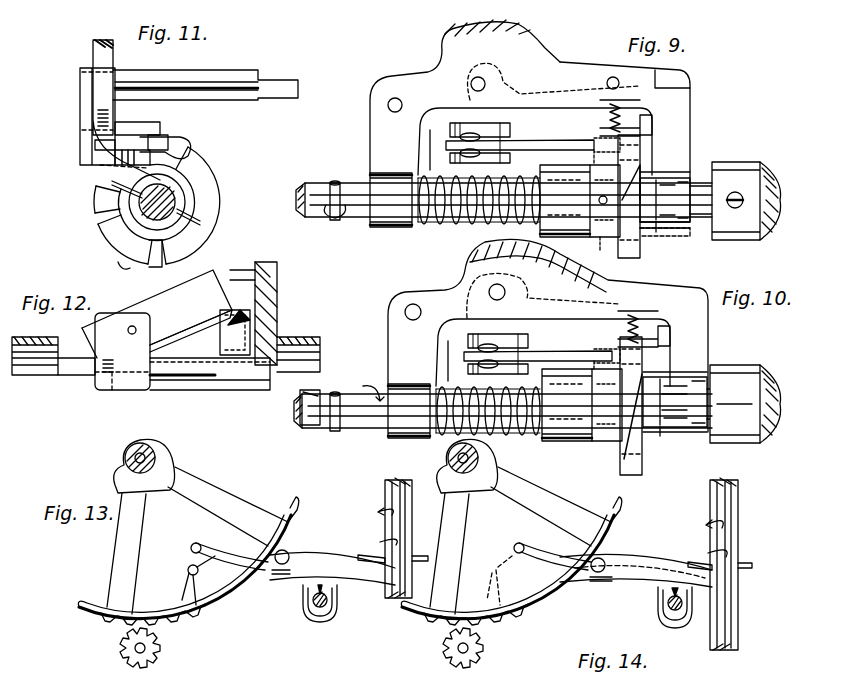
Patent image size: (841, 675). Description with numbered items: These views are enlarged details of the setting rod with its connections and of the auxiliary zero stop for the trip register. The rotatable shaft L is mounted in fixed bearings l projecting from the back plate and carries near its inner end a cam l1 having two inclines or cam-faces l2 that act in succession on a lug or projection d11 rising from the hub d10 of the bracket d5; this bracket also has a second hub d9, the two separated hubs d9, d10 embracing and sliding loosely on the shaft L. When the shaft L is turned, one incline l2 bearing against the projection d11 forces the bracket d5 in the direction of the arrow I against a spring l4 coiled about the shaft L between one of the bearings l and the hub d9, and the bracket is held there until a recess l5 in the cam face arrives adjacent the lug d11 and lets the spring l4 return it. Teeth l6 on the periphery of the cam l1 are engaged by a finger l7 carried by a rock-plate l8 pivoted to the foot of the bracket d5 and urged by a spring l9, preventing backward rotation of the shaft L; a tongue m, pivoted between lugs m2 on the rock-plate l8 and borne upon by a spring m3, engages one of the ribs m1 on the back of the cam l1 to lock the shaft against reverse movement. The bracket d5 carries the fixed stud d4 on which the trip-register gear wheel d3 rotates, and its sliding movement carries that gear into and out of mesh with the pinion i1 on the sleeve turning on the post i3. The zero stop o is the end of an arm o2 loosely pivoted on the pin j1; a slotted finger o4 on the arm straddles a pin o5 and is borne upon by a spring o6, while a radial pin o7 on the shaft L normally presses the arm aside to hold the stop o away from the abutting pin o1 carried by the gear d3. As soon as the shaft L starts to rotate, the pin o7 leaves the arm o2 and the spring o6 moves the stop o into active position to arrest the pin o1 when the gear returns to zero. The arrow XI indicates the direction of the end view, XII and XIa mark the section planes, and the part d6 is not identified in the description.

In FIG. 11, the bracket d5 is at (93, 42).
In FIG. 12, the bracket d5 is at (40, 380).
In FIG. 9, the bracket d5 is at (525, 25).
In FIG. 10, the bracket d5 is at (455, 252).
In FIG. 11, the frame bar d6 is at (255, 72).
In FIG. 12, the frame bar d6 is at (283, 285).
In FIG. 9, the frame bar d6 is at (690, 90).
In FIG. 9, the hub d9 is at (391, 200).
In FIG. 10, the hub d9 is at (409, 411).
In FIG. 9, the hub d10 is at (672, 165).
In FIG. 10, the hub d10 is at (675, 391).
In FIG. 9, the lug or projection d11 is at (664, 200).
In FIG. 10, the lug or projection d11 is at (674, 402).
In FIG. 13, the central fixed stud d4 is at (153, 452).
In FIG. 14, the central fixed stud d4 is at (448, 458).
In FIG. 13, the trip-register gear wheel d3 is at (203, 620).
In FIG. 14, the trip-register gear wheel d3 is at (511, 543).
In FIG. 11, the fixed bearings l is at (215, 178).
In FIG. 12, the fixed bearings l is at (277, 318).
In FIG. 9, the fixed bearings l is at (565, 201).
In FIG. 10, the fixed bearings l is at (567, 405).
In FIG. 9, the cam l1 is at (640, 245).
In FIG. 10, the cam l1 is at (639, 406).
In FIG. 9, the inclines or cam-faces l2 is at (605, 201).
In FIG. 10, the inclines or cam-faces l2 is at (603, 416).
In FIG. 9, the spring l4 is at (425, 228).
In FIG. 10, the spring l4 is at (488, 396).
In FIG. 9, the recess l5 is at (655, 236).
In FIG. 11, the teeth l6 is at (118, 266).
In FIG. 12, the finger l7 is at (235, 332).
In FIG. 9, the finger l7 is at (652, 128).
In FIG. 10, the finger l7 is at (654, 332).
In FIG. 11, the rock-plate l8 is at (80, 102).
In FIG. 12, the rock-plate l8 is at (205, 385).
In FIG. 9, the rock-plate l8 is at (555, 112).
In FIG. 10, the rock-plate l8 is at (553, 352).
In FIG. 11, the spring l9 is at (97, 118).
In FIG. 9, the spring l9 is at (608, 112).
In FIG. 10, the spring l9 is at (641, 315).
In FIG. 11, the shaft L is at (147, 212).
In FIG. 12, the shaft L is at (300, 405).
In FIG. 9, the shaft L is at (300, 195).
In FIG. 10, the shaft L is at (494, 411).
In FIG. 13, the shaft L is at (385, 492).
In FIG. 14, the shaft L is at (738, 603).
In FIG. 11, the tongue m is at (190, 145).
In FIG. 12, the tongue m is at (157, 314).
In FIG. 9, the tongue m is at (545, 150).
In FIG. 10, the tongue m is at (538, 359).
In FIG. 11, the ribs m1 is at (165, 135).
In FIG. 12, the ribs m1 is at (191, 331).
In FIG. 9, the ribs m1 is at (600, 199).
In FIG. 10, the ribs m1 is at (606, 372).
In FIG. 11, the lugs m2 is at (150, 122).
In FIG. 12, the lugs m2 is at (122, 351).
In FIG. 9, the lugs m2 is at (480, 123).
In FIG. 10, the lugs m2 is at (494, 351).
In FIG. 11, the spring m3 is at (95, 146).
In FIG. 12, the spring m3 is at (108, 372).
In FIG. 9, the spring m3 is at (455, 133).
In FIG. 10, the spring m3 is at (470, 348).
In FIG. 13, the supplemental zero stop o is at (200, 543).
In FIG. 14, the supplemental zero stop o is at (523, 543).
In FIG. 13, the abutting pin o1 is at (188, 572).
In FIG. 14, the abutting pin o1 is at (492, 575).
In FIG. 13, the arm o2 is at (332, 568).
In FIG. 14, the arm o2 is at (636, 570).
In FIG. 13, the slotted finger o4 is at (303, 595).
In FIG. 14, the slotted finger o4 is at (658, 612).
In FIG. 13, the pin o5 is at (320, 608).
In FIG. 14, the pin o5 is at (677, 611).
In FIG. 13, the spring o6 is at (322, 588).
In FIG. 14, the spring o6 is at (676, 588).
In FIG. 11, the radial pin o7 is at (112, 184).
In FIG. 9, the radial pin o7 is at (333, 220).
In FIG. 10, the radial pin o7 is at (357, 420).
In FIG. 13, the radial pin o7 is at (368, 552).
In FIG. 14, the radial pin o7 is at (698, 560).
In FIG. 13, the pinion i1 is at (158, 660).
In FIG. 14, the pinion i1 is at (473, 650).
In FIG. 13, the post i3 is at (120, 651).
In FIG. 14, the post i3 is at (428, 649).
In FIG. 13, the pin j1 is at (286, 550).
In FIG. 14, the pin j1 is at (595, 556).
In FIG. 9, the arrow XI is at (355, 126).
In FIG. 9, the section line XII is at (695, 155).
In FIG. 10, the section line XIa is at (716, 425).
In FIG. 9, the arrow I is at (525, 78).